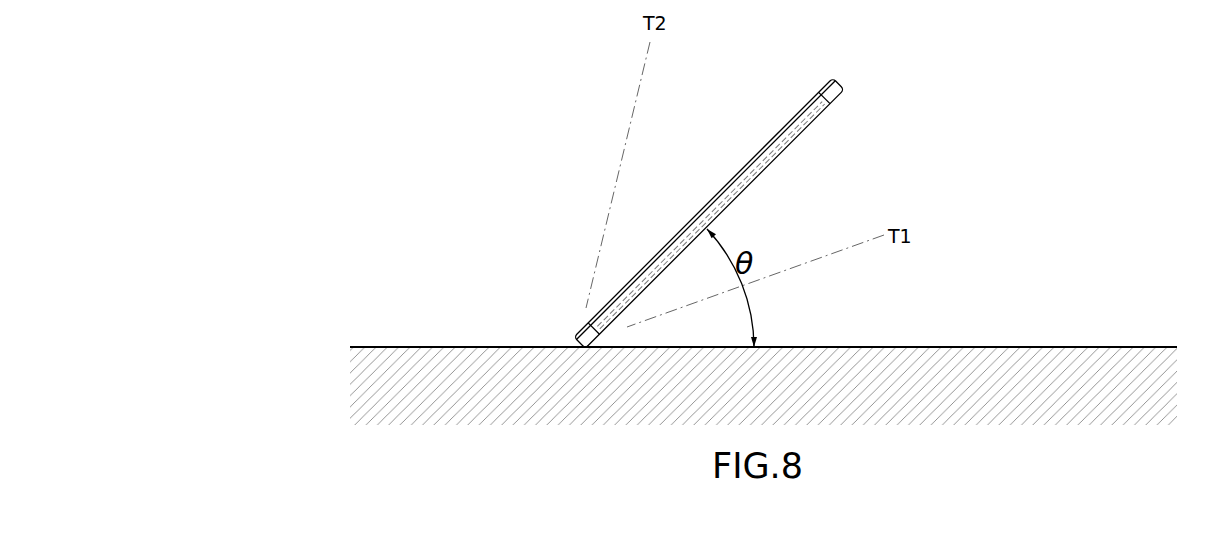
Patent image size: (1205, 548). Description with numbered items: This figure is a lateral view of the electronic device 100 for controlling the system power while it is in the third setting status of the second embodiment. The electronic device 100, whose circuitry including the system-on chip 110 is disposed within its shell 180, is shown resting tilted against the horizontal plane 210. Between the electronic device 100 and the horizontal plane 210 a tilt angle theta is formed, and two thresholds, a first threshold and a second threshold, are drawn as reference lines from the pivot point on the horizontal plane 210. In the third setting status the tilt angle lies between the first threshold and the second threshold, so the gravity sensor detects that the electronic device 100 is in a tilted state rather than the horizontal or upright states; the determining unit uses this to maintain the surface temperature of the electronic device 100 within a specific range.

The electronic device 100 is at (840, 127).
The system-on chip 110 is at (699, 211).
The shell 180 is at (812, 97).
The horizontal plane 210 is at (1023, 347).